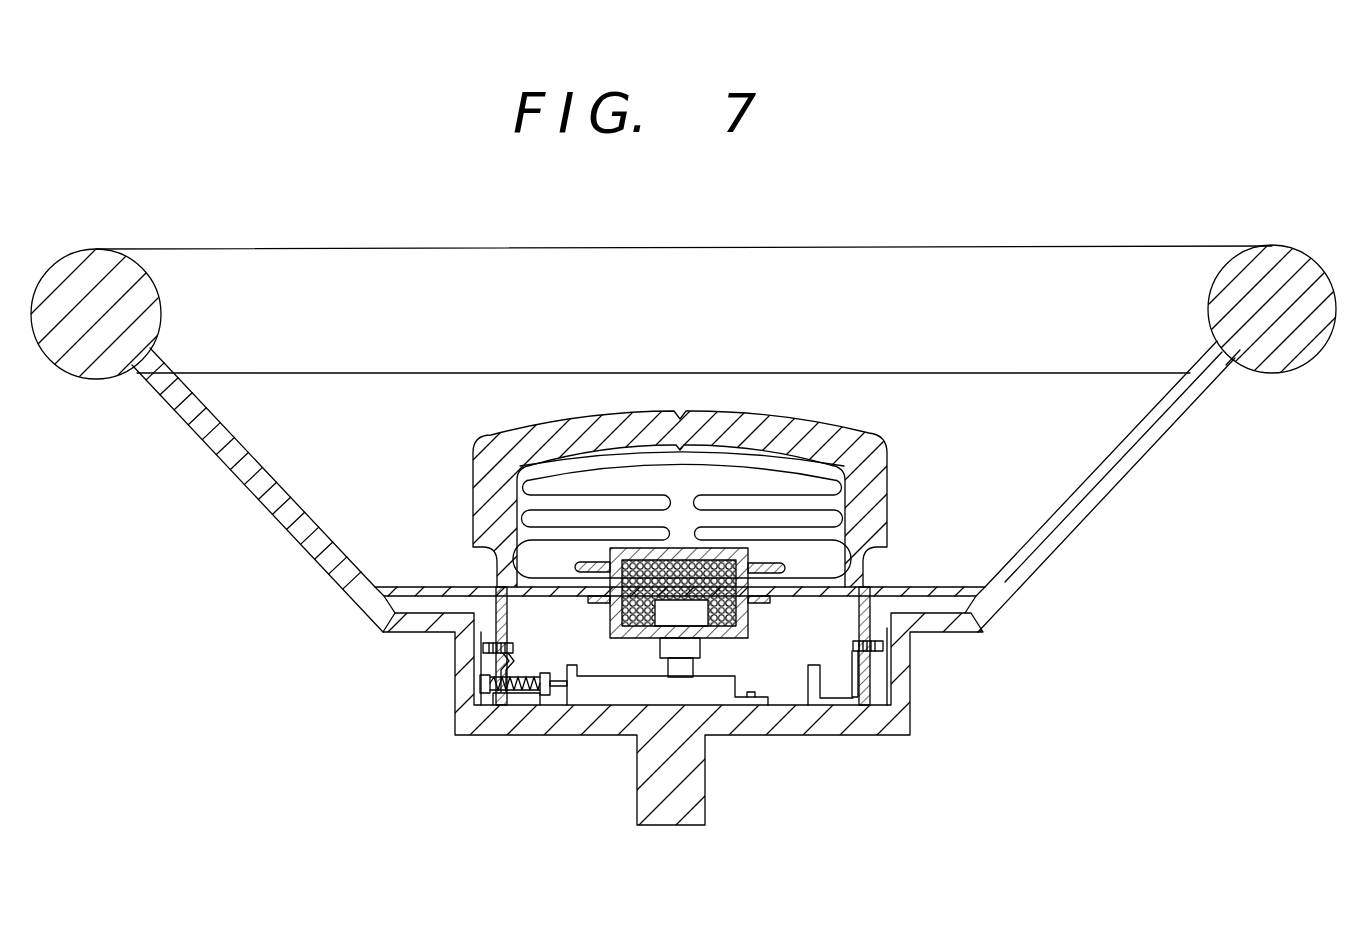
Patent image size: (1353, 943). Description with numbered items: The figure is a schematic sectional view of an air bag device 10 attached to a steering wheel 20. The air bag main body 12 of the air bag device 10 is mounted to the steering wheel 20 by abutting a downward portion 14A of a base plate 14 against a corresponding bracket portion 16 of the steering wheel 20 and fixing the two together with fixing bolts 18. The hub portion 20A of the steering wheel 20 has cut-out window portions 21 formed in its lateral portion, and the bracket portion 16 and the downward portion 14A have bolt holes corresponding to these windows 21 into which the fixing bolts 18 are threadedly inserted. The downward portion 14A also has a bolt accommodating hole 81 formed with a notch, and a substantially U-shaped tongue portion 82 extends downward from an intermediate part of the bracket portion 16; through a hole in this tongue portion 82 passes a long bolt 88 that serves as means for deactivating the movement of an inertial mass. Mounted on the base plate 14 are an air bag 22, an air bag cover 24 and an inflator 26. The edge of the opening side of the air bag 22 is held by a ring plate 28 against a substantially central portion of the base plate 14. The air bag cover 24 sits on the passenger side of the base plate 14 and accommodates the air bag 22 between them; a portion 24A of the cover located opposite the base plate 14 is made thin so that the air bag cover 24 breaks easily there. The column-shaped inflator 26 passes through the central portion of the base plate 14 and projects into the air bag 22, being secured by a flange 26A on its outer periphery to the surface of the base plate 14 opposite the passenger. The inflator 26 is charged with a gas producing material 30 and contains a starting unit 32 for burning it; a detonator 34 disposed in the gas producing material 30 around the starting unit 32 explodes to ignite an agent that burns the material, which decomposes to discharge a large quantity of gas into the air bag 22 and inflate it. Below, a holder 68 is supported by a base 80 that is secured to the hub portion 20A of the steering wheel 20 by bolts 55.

The air bag device 10 is at (699, 498).
The air bag main body 12 is at (699, 498).
The base plate 14 is at (500, 588).
The downward portion 14A is at (507, 610).
The bracket portion 16 is at (416, 587).
The fixing bolts 18 is at (492, 650).
The steering wheel 20 is at (806, 247).
The hub portion 20A is at (895, 740).
The cut-out window portions 21 is at (457, 695).
The air bag 22 is at (568, 478).
The air bag cover 24 is at (886, 472).
The thin portion 24A is at (680, 413).
The inflator 26 is at (880, 505).
The flange 26A is at (768, 602).
The ring plate 28 is at (790, 568).
The gas producing material 30 is at (700, 562).
The starting unit 32 is at (706, 628).
The detonator 34 is at (700, 558).
The bolts 55 is at (752, 692).
The holder 68 is at (697, 668).
The base 80 is at (675, 715).
The bolt accommodating hole 81 is at (508, 695).
The tongue portion 82 is at (528, 707).
The long bolt 88 is at (556, 650).